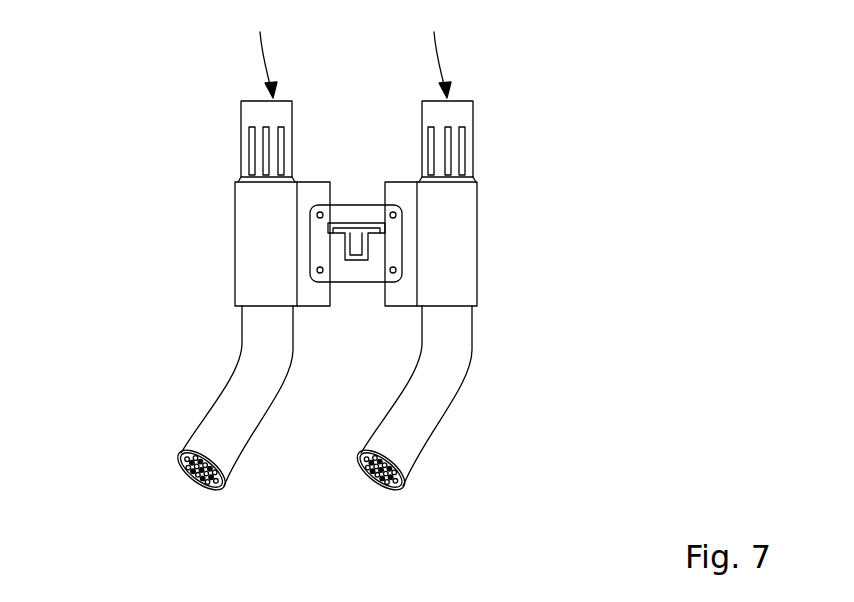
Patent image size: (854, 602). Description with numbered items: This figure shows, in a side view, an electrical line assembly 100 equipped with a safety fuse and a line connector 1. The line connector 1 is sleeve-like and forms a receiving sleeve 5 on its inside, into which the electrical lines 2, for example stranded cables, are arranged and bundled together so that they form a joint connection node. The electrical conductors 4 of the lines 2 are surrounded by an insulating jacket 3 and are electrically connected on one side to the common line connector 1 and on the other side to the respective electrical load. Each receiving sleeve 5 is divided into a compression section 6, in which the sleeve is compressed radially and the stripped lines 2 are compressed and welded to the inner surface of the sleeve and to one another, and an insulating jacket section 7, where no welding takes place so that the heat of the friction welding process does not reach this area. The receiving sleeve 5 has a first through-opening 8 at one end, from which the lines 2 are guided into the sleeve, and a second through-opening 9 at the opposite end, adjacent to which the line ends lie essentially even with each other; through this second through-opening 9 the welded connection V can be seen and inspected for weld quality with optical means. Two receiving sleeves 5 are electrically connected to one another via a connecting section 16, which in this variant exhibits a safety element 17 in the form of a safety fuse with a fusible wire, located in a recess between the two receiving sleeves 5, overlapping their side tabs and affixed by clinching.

The electrical line assembly 100 is at (117, 81).
The line connector 1 is at (212, 241).
The electrical lines 2 is at (238, 398).
The insulating jacket 3 is at (212, 396).
The electrical conductors 4 is at (183, 470).
The receiving sleeve 5 is at (260, 230).
The compression section 6 is at (475, 104).
The insulating jacket section 7 is at (478, 185).
The first through-opening 8 is at (467, 310).
The second through-opening 9 is at (252, 99).
The connecting section 16 is at (342, 270).
The safety element 17 is at (352, 262).
The welded connection V is at (348, 50).